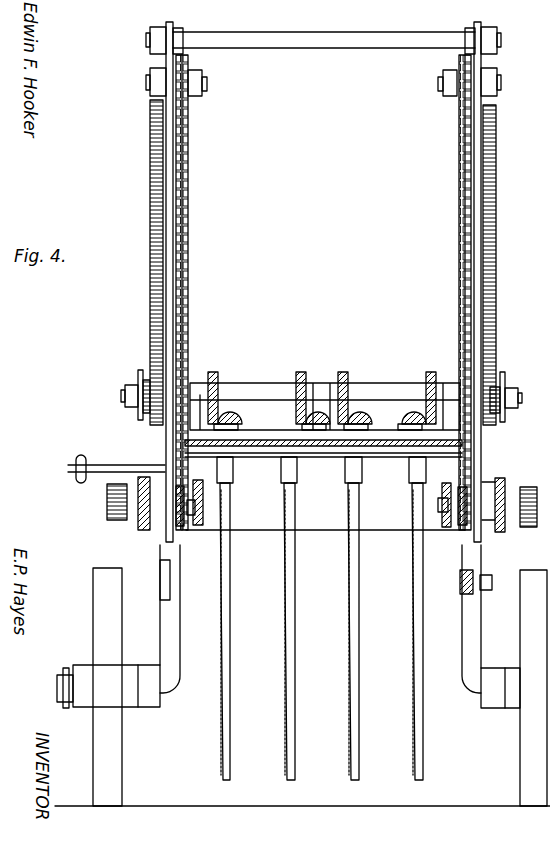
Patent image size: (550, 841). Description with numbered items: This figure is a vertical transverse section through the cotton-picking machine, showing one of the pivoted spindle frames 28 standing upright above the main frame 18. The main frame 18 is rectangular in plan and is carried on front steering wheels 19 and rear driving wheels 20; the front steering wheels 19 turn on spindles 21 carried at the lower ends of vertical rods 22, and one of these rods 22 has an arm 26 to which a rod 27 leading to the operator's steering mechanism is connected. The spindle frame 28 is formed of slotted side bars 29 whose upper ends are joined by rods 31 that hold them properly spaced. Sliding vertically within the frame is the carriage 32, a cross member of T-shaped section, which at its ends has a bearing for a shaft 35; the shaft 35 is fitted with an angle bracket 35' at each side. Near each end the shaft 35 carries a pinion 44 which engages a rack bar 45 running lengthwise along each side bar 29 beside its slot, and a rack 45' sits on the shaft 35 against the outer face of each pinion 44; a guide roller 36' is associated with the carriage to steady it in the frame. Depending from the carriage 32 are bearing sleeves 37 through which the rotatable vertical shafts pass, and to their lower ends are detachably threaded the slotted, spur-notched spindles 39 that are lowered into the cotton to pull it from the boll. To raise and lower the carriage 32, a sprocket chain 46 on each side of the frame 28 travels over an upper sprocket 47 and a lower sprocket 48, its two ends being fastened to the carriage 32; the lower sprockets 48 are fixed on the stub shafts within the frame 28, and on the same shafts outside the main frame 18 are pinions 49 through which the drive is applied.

The frame 18 is at (145, 477).
The front steering wheels 19 is at (122, 728).
The rear driving wheels 20 is at (204, 518).
The spindles 21 is at (60, 672).
The vertical rods 22 is at (165, 633).
The arm 26 is at (105, 465).
The rod 27 is at (80, 456).
The spindle frames 28 is at (150, 100).
The slotted side bars 29 is at (173, 197).
The rods 31 is at (333, 50).
The carriage 32 is at (445, 438).
The shaft 35 is at (325, 396).
The angle bracket 35' is at (322, 379).
The guide roller 36' is at (320, 417).
The bearing sleeves 37 is at (281, 468).
The spindles 39 is at (226, 620).
The pinion 44 is at (142, 376).
The rack bar 45 is at (319, 262).
The rack 45' is at (306, 399).
The sprocket chain 46 is at (188, 283).
The upper sprockets 47 is at (195, 97).
The lower sprockets 48 is at (178, 520).
The pinions 49 is at (107, 500).